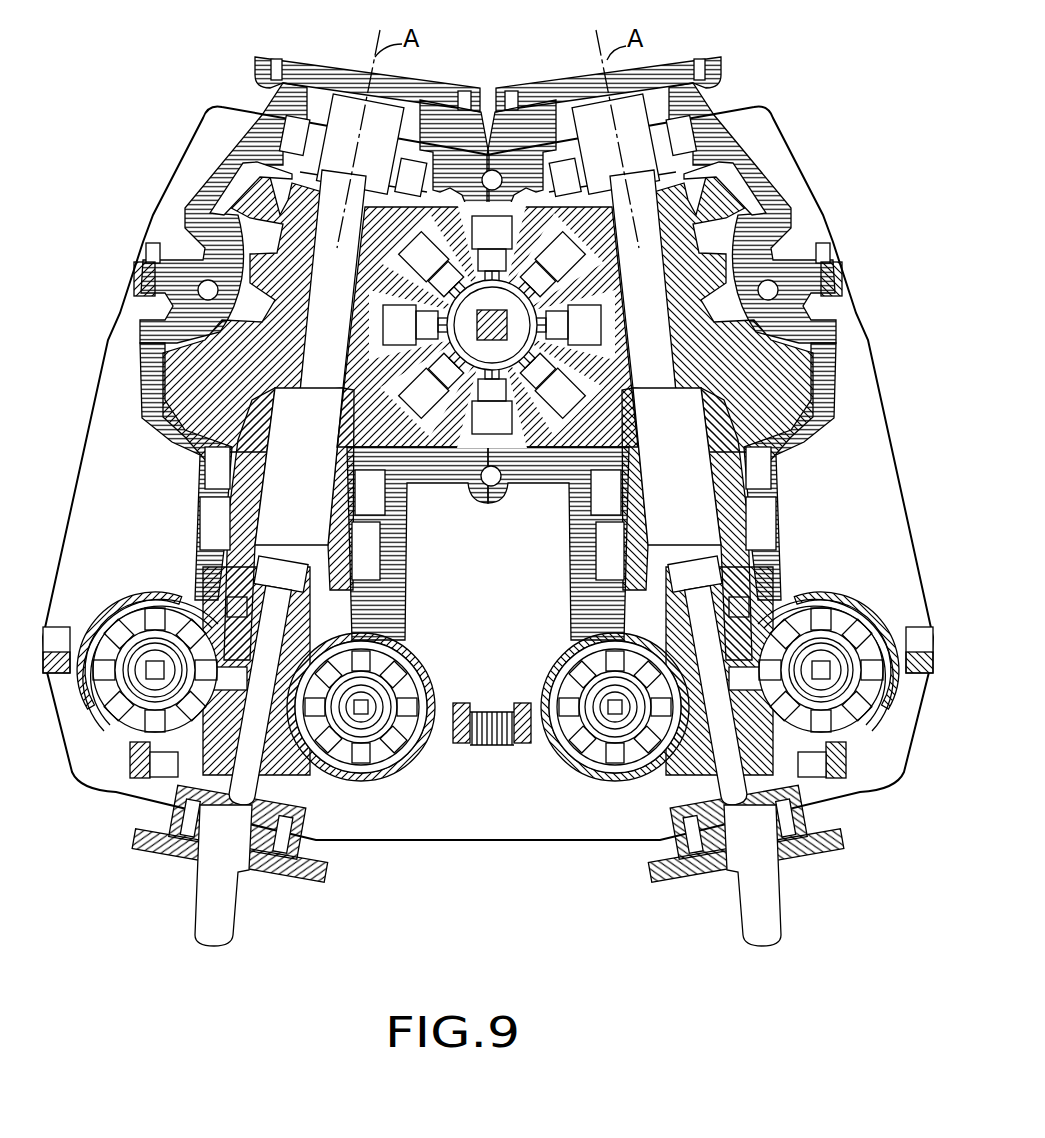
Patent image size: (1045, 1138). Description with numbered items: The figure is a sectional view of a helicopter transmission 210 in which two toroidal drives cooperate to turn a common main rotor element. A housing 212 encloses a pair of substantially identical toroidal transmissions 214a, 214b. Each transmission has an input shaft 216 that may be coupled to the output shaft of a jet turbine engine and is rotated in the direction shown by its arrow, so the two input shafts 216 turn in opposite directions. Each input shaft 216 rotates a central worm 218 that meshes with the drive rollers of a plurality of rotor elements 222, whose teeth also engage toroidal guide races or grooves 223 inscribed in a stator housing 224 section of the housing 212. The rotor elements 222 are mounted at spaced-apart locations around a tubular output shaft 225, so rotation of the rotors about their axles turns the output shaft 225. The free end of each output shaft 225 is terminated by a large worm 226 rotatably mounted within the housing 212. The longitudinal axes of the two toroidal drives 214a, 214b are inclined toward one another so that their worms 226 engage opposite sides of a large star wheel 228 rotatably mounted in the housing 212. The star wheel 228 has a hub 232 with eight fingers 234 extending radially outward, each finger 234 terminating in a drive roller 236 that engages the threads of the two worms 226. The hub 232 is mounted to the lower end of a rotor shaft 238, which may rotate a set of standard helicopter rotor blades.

The helicopter transmission 210 is at (799, 112).
The housing 212 is at (118, 342).
The toroidal transmission 214a is at (131, 569).
The toroidal transmission 214b is at (891, 566).
The input shaft 216 is at (256, 905).
The central worm 218 is at (140, 753).
The rotor element 222 is at (384, 760).
The toroidal guide race 223 is at (402, 657).
The stator housing 224 is at (432, 675).
The tubular output shaft 225 is at (247, 503).
The large worm 226 is at (212, 408).
The star wheel 228 is at (421, 304).
The hub 232 is at (548, 305).
The finger 234 is at (552, 288).
The drive roller 236 is at (568, 262).
The rotor shaft 238 is at (500, 333).